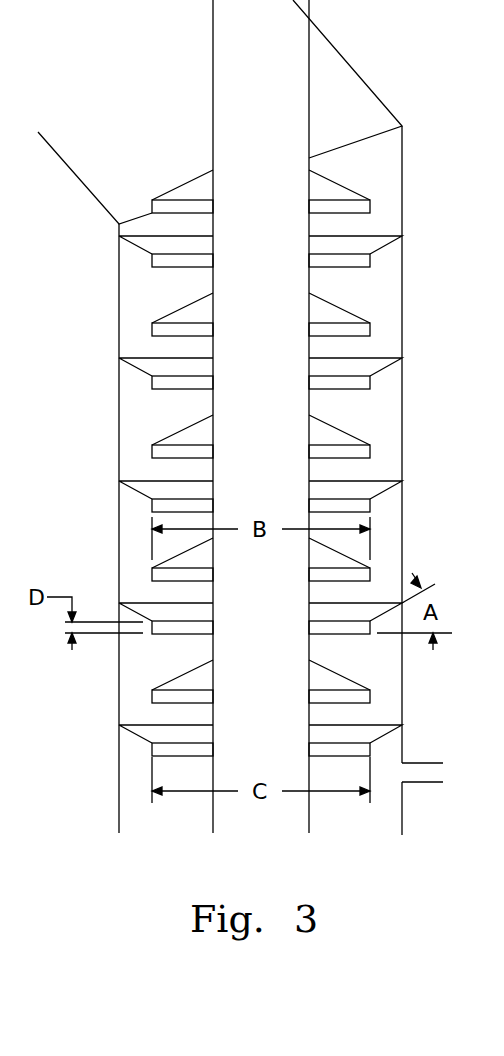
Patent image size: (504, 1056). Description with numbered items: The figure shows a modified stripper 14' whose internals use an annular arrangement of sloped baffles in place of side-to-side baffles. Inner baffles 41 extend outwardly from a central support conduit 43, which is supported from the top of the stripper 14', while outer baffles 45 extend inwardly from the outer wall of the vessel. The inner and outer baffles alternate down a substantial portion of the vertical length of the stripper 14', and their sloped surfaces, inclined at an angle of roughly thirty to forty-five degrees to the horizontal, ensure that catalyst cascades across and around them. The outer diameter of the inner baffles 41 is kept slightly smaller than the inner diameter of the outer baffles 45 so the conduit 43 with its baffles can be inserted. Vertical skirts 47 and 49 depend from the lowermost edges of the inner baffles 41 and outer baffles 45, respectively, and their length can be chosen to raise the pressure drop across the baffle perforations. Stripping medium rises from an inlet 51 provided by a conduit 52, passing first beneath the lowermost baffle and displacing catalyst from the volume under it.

The stripper 14' is at (294, 479).
The inner baffles 41 is at (340, 184).
The central support conduit 43 is at (311, 44).
The outer baffles 45 is at (374, 248).
The vertical skirt 47 is at (358, 210).
The vertical skirt 49 is at (360, 389).
The inlet 51 is at (403, 772).
The conduit 52 is at (443, 782).